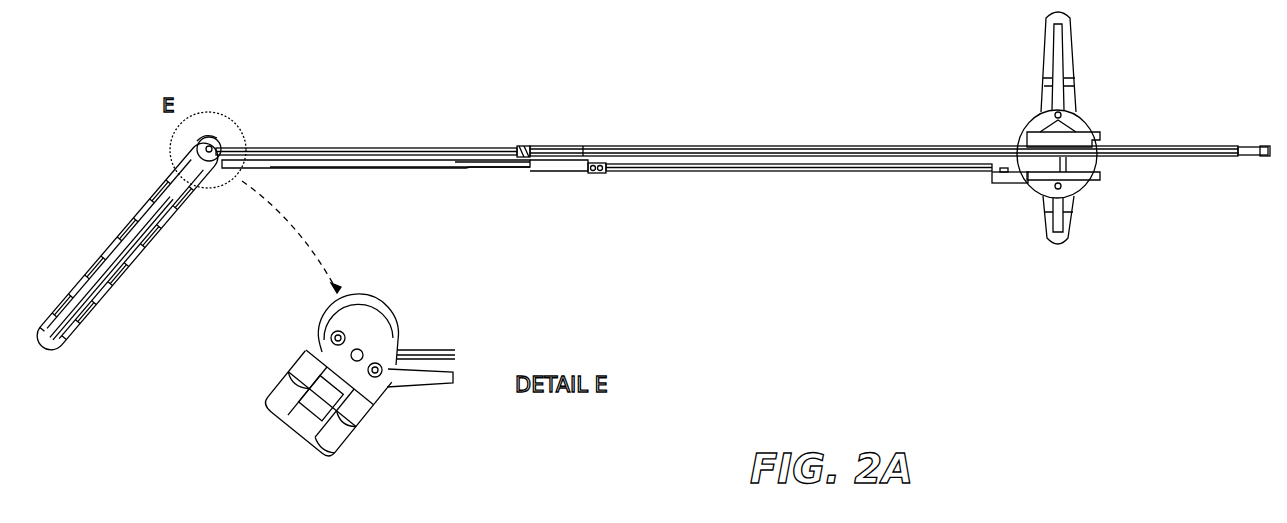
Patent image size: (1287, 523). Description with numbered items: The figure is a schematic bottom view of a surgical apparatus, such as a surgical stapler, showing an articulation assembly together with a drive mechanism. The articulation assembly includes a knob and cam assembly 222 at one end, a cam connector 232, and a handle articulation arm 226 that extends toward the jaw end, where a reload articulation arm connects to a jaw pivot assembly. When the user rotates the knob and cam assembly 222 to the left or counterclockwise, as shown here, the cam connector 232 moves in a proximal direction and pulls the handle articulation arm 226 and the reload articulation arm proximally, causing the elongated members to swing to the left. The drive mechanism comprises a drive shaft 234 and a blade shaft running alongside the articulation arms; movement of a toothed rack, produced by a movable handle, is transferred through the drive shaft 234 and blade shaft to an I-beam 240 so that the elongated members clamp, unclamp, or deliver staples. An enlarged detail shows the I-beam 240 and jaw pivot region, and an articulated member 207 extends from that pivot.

The handle 207 is at (112, 242).
The knob and cam assembly 222 is at (1068, 78).
The handle articulation arm 226 is at (793, 168).
The cam connector 232 is at (1018, 181).
The drive shaft 234 is at (672, 150).
The I-beam 240 is at (302, 365).